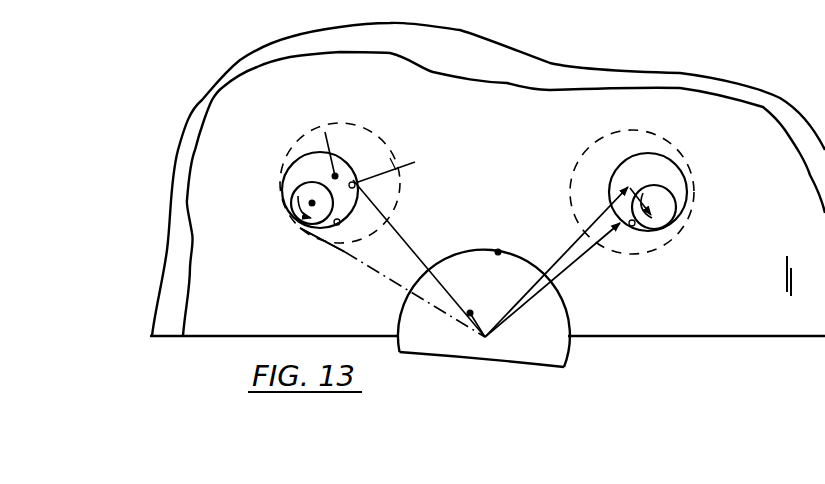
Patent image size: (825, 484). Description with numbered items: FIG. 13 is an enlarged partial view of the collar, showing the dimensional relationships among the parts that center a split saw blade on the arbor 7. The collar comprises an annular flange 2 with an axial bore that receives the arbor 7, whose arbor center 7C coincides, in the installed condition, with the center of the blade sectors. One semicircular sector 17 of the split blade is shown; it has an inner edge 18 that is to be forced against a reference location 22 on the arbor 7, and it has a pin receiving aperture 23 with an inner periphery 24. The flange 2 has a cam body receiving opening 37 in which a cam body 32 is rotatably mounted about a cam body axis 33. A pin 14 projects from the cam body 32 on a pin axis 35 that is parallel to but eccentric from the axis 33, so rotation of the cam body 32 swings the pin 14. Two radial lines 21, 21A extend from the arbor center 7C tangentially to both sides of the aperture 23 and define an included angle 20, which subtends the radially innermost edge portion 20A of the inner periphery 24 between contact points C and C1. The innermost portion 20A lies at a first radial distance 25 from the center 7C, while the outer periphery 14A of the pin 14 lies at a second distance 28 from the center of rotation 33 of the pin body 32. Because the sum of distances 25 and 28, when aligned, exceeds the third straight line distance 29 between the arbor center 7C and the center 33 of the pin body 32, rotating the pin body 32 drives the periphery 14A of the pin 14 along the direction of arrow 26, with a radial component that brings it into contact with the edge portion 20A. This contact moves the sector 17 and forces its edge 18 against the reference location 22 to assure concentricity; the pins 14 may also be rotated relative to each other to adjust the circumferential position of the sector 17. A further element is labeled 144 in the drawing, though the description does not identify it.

The annular flange 2 is at (423, 45).
The semicircular sector 17 is at (403, 87).
The pin 14 is at (293, 214).
The outer periphery of pin 14A is at (300, 226).
The pin receiving aperture 23 is at (298, 160).
The pin axis 35 is at (284, 178).
The cam body axis 33 is at (318, 154).
The contact point C1 is at (357, 180).
The contact point C is at (297, 224).
The radially innermost edge portion 20A is at (402, 166).
The radial line 21 is at (388, 215).
The radial line 21A is at (378, 272).
The inner periphery 24 is at (338, 226).
The arbor 7 is at (569, 326).
The arbor center 7C is at (484, 339).
The reference location 22 is at (460, 252).
The inner edge 18 is at (498, 252).
The included angle 20 is at (471, 312).
The third straight line distance 29 is at (578, 239).
The first radial distance 25 is at (575, 262).
The cam body receiving opening 37 is at (607, 135).
The cam body 32 is at (630, 128).
The second distance 28 is at (668, 193).
The arrow 26 is at (676, 211).
The shaft 144 is at (668, 224).